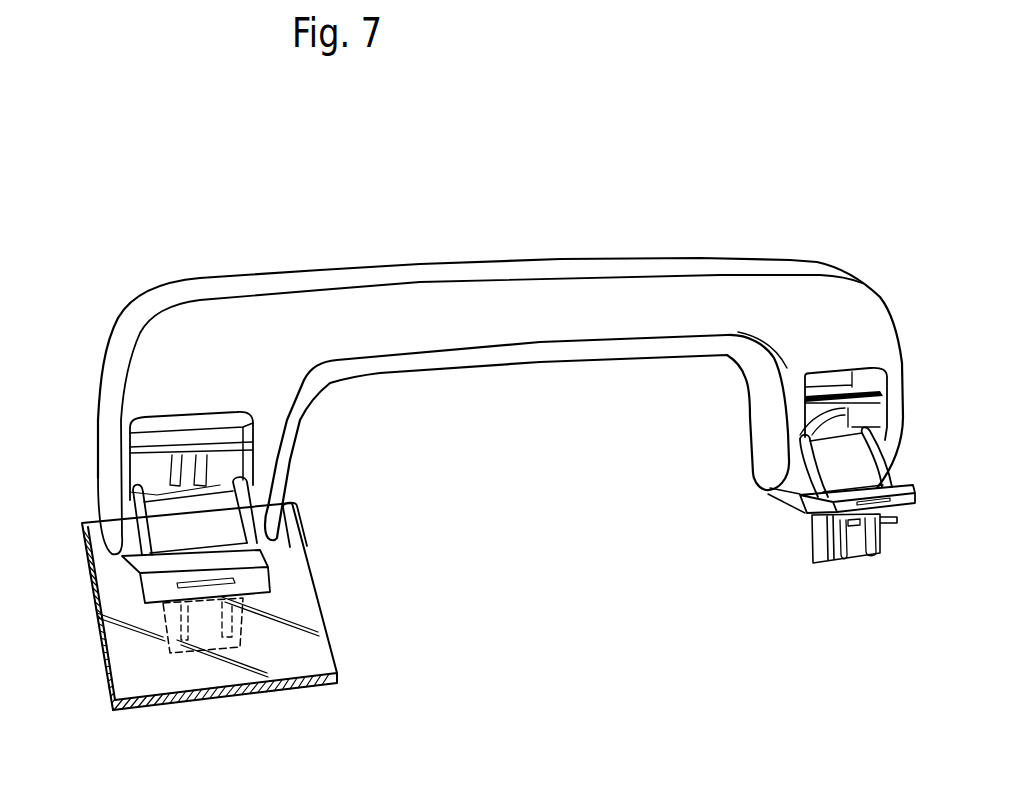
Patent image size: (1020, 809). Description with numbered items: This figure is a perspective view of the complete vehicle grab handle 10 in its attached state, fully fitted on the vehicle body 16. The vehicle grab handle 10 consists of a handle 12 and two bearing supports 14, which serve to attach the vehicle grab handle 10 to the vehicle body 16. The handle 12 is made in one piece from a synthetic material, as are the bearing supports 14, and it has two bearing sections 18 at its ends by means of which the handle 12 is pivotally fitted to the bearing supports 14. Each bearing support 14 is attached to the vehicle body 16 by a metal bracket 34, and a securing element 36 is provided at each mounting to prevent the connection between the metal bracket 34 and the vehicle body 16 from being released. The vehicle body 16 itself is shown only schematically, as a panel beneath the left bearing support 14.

The vehicle grab handle 10 is at (450, 236).
The handle 12 is at (626, 294).
The bearing supports 14 is at (248, 505).
The vehicle body 16 is at (287, 663).
The bearing sections 18 is at (124, 468).
The metal brackets 34 is at (853, 556).
The securing elements 36 is at (228, 533).